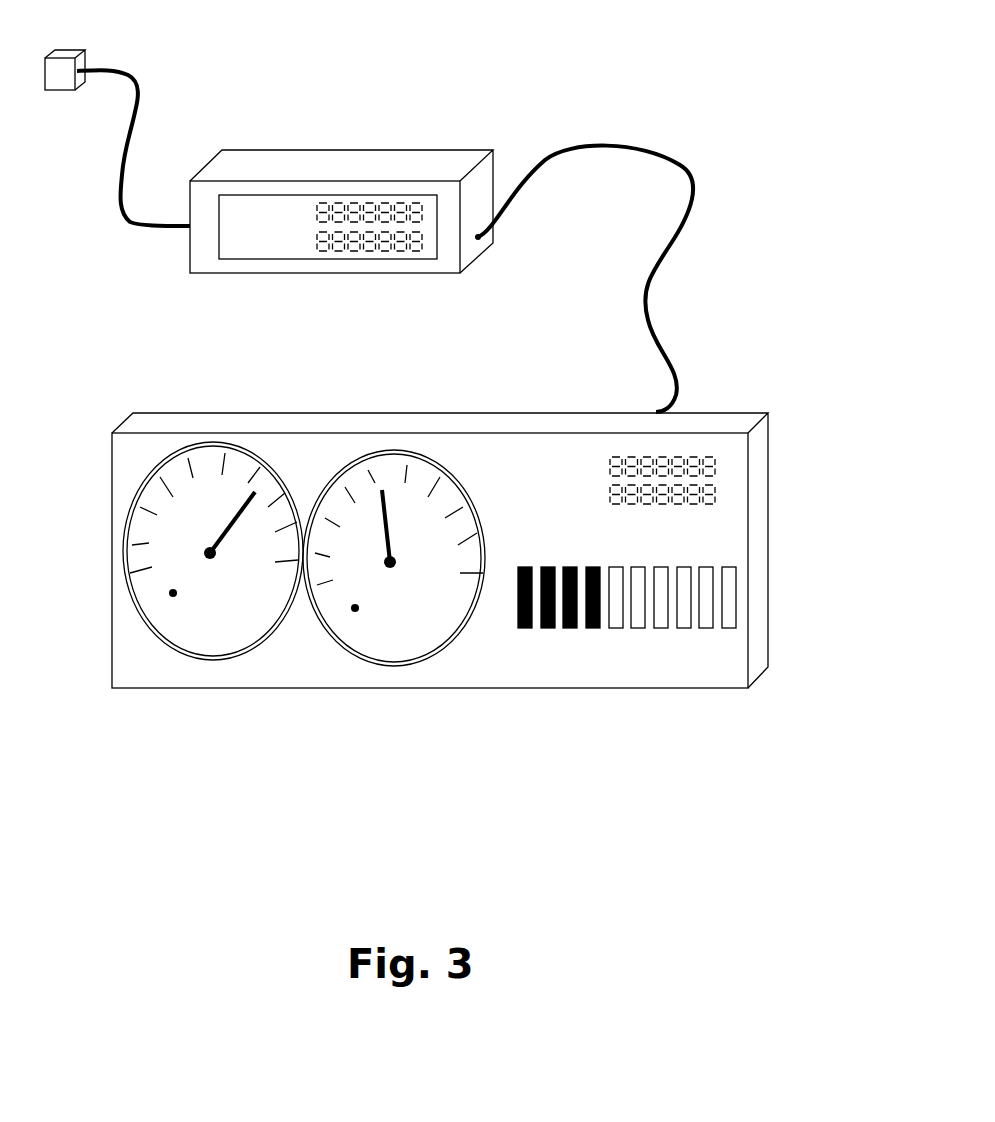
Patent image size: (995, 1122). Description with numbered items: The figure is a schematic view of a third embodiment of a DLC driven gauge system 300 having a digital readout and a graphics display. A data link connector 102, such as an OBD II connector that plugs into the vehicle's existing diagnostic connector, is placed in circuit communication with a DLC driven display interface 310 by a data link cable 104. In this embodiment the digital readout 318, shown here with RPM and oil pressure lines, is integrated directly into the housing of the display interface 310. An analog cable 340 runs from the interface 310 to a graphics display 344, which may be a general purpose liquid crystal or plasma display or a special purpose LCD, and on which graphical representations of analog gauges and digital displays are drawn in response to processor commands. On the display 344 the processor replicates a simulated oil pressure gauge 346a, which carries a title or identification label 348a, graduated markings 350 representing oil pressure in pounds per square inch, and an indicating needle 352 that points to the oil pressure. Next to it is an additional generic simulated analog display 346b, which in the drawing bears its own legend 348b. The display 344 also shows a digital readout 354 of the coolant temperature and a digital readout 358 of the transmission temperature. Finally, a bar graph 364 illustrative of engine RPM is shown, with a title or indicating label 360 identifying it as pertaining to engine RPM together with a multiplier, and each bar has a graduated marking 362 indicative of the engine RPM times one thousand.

The data link connector 102 is at (73, 50).
The data link cable 104 is at (137, 110).
The DLC driven gauge system 300 is at (587, 50).
The DLC driven display interface 310 is at (323, 150).
The digital readout 318 is at (312, 260).
The analog cable 340 is at (610, 143).
The graphics display 344 is at (392, 413).
The simulated oil pressure gauge 346a is at (210, 658).
The identification label 348a is at (228, 633).
The graduated markings 350 is at (160, 598).
The indicating needle 352 is at (232, 525).
The simulated analog display 346b is at (392, 667).
The second gauge legend 348b is at (367, 622).
The coolant temperature digital readout 354 is at (580, 458).
The transmission temperature digital readout 358 is at (485, 490).
The indicating label 360 is at (637, 657).
The graduated marking 362 is at (738, 547).
The bar graph 364 is at (737, 600).